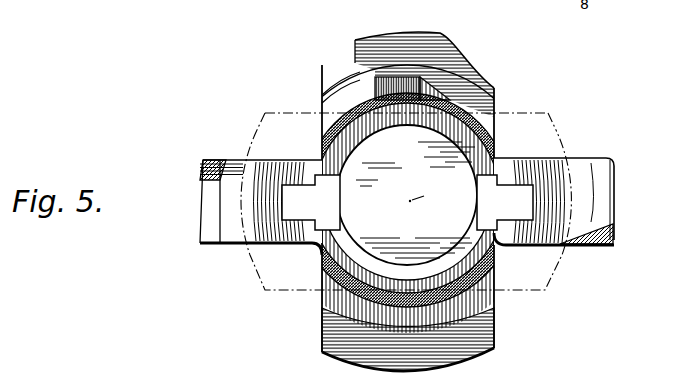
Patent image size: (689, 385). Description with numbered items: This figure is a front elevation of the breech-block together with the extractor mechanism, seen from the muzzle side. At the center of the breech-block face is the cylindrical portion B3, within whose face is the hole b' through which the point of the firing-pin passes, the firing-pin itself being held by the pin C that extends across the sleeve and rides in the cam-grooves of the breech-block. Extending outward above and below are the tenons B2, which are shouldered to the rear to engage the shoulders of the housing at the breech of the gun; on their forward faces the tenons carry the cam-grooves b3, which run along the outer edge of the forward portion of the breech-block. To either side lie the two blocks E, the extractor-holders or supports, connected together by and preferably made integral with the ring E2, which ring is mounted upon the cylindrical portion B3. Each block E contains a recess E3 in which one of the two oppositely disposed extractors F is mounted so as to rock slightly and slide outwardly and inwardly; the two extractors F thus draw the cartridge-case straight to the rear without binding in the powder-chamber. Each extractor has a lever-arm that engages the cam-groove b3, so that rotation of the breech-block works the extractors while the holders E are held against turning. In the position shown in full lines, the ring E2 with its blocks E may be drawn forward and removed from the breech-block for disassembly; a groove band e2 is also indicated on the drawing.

The cylindrical portion B3 is at (407, 195).
The annular groove band e2 is at (337, 133).
The tenons B2 is at (443, 54).
The cam-grooves b3 is at (340, 36).
The blocks E is at (262, 180).
The recess E3 is at (517, 143).
The extractors F is at (407, 202).
The pin C is at (406, 203).
The hole b' is at (426, 188).
The ring E2 is at (497, 112).